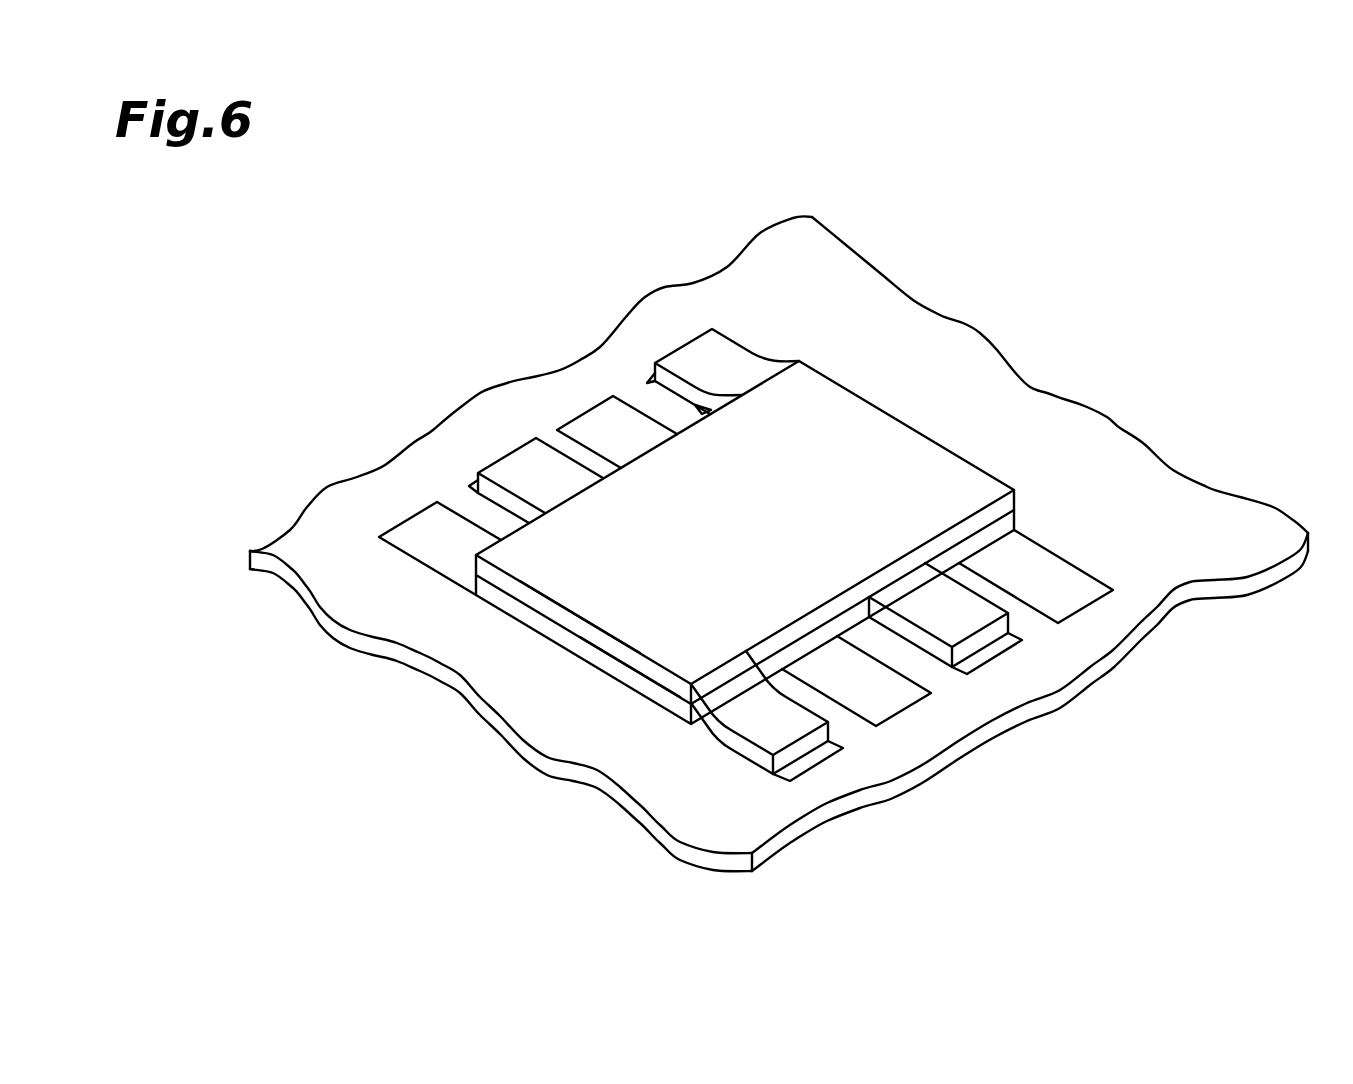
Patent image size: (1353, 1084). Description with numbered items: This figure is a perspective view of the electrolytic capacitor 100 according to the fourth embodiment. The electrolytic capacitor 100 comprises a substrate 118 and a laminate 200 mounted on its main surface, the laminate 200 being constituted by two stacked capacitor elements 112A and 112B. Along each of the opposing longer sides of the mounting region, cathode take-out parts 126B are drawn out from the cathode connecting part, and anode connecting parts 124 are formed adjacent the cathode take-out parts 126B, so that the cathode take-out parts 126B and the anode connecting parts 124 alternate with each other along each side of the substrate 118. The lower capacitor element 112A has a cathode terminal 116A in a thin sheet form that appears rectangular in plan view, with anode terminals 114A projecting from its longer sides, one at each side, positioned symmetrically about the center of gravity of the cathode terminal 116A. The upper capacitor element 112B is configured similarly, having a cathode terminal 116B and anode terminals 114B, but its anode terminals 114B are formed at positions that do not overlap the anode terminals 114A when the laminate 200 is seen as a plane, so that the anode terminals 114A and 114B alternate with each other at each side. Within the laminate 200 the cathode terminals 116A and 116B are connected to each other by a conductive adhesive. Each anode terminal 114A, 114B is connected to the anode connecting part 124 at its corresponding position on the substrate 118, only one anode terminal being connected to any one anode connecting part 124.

The electrolytic capacitor 100 is at (995, 220).
The capacitor element 112A is at (527, 630).
The capacitor element 112B is at (507, 596).
The anode terminal 114A is at (527, 463).
The anode terminal 114B is at (700, 357).
The cathode terminal 116A is at (653, 688).
The cathode terminal 116B is at (607, 643).
The substrate 118 is at (1020, 398).
The anode connecting part 124 is at (652, 377).
The cathode take-out part 126B is at (423, 532).
The laminate 200 is at (345, 800).